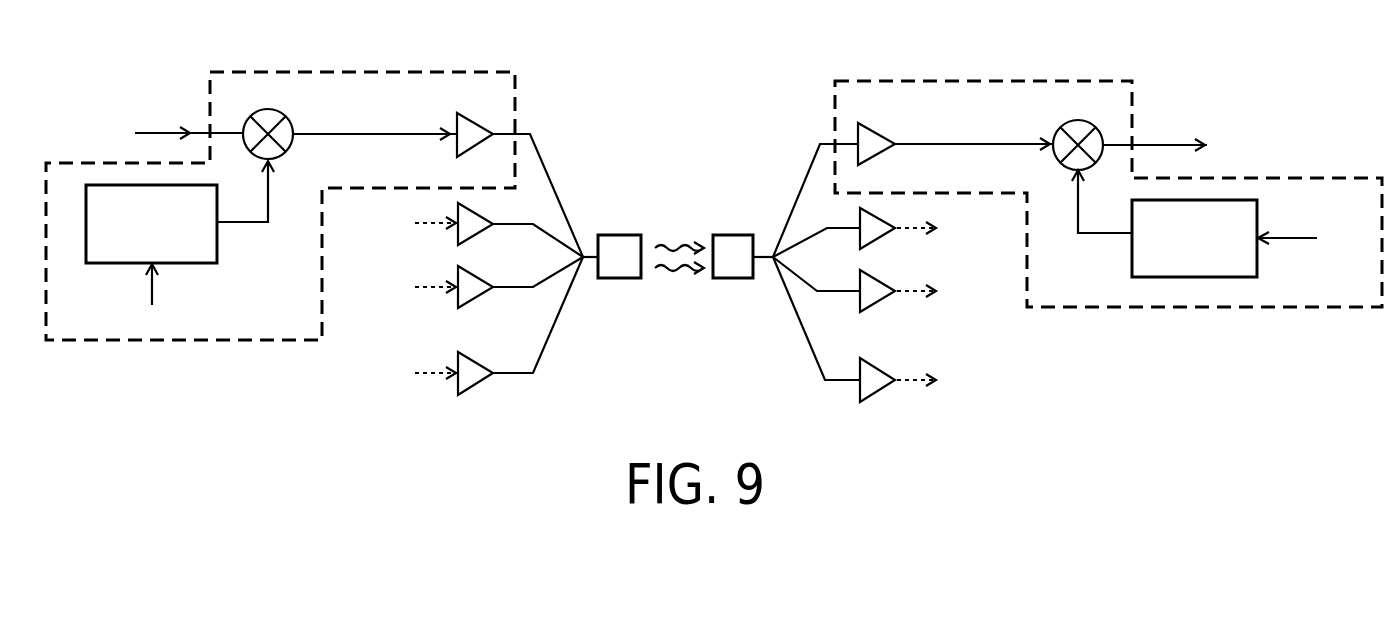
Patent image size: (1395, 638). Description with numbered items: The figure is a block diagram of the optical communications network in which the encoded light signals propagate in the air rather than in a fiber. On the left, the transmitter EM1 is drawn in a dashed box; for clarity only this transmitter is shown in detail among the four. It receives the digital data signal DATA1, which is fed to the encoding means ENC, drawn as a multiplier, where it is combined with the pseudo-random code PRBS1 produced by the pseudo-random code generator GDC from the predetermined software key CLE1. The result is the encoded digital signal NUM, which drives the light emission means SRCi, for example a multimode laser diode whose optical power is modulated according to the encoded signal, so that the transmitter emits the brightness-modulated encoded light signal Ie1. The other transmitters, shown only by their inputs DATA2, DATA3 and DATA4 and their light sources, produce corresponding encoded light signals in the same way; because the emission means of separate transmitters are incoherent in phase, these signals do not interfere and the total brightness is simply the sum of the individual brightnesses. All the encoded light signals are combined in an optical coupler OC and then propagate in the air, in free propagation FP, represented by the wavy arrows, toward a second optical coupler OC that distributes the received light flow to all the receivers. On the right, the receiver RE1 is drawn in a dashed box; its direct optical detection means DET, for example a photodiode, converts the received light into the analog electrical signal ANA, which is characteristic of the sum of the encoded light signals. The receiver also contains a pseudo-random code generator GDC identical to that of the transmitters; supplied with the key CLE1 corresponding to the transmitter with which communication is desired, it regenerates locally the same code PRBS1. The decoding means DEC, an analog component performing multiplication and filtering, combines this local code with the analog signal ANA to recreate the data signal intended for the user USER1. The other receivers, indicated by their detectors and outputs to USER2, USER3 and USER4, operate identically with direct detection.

The transmitter EM1 is at (413, 72).
The encoding means ENC is at (269, 109).
The digital data signal DATA1 is at (148, 128).
The encoded digital signal NUM is at (375, 124).
The light emission means SRCi is at (478, 122).
The encoded light signal Ie1 is at (538, 184).
The pseudo-random code generator GDC is at (100, 264).
The pseudo-random code PRBS1 is at (674, 217).
The software key CLE1 is at (751, 283).
The digital data signal DATA2 is at (462, 228).
The digital data signal DATA3 is at (462, 282).
The digital data signal DATA4 is at (462, 334).
The optical coupler OC is at (630, 283).
The free propagation FP is at (677, 241).
The receiver RE1 is at (978, 81).
The direct optical detection means DET is at (875, 120).
The analog electrical signal ANA is at (974, 134).
The decoding means DEC is at (1096, 125).
The user USER1 is at (1192, 150).
The user USER2 is at (893, 229).
The user USER3 is at (893, 284).
The user USER4 is at (893, 332).